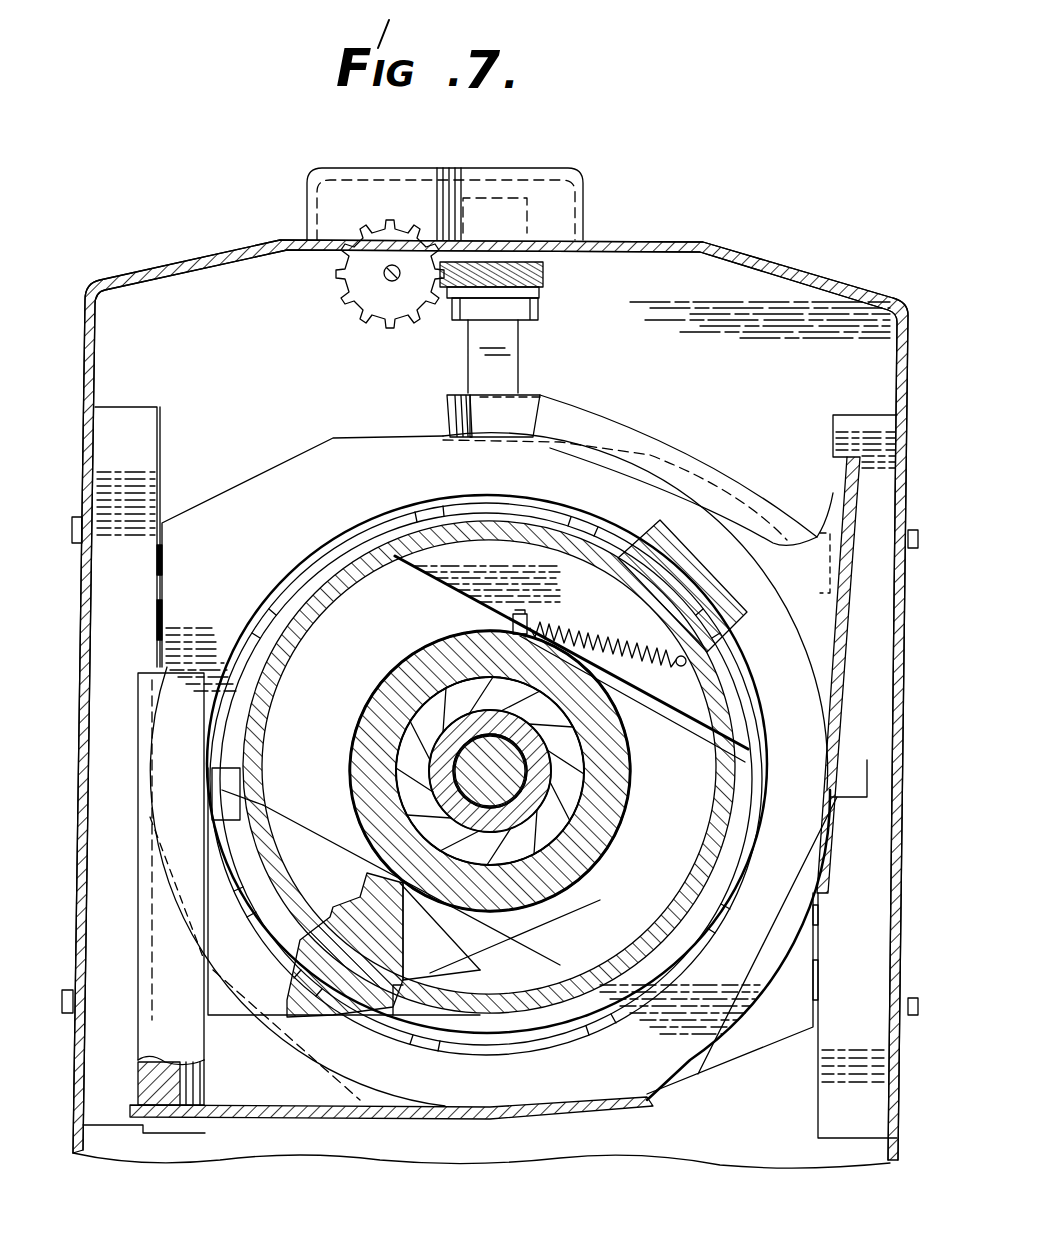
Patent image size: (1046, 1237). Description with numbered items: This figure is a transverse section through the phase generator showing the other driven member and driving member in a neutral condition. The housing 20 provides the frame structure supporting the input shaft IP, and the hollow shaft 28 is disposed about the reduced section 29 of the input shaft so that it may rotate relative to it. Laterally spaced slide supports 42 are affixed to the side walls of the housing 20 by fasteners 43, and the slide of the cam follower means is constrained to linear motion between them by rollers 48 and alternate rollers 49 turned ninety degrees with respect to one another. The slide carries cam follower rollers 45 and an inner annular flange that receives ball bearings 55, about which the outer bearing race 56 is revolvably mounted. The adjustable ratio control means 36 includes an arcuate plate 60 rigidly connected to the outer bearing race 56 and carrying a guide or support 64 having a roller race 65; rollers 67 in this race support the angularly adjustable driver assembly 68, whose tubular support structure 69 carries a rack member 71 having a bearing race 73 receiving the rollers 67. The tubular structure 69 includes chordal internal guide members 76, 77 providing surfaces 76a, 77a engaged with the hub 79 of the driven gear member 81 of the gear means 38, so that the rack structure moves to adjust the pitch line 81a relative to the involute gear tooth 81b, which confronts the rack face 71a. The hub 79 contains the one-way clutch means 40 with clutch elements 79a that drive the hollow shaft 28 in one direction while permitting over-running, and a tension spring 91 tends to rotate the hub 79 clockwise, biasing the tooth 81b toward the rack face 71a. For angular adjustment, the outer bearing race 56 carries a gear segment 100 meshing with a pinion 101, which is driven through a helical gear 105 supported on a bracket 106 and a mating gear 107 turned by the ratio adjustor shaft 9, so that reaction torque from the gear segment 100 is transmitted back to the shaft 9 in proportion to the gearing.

The housing 20 is at (752, 262).
The ratio adjustor shaft 9 is at (384, 273).
The mating gear 107 is at (370, 298).
The helical gear 105 is at (545, 278).
The bracket 106 is at (540, 300).
The gear segment 100 is at (522, 412).
The pinion 101 is at (447, 418).
The outer bearing race 56 is at (598, 460).
The ball bearings 55 is at (600, 462).
The cam follower rollers 45 is at (410, 515).
The tubular support structure 69 is at (345, 578).
The driver assembly 68 is at (298, 597).
The fasteners 43 is at (75, 520).
The rollers 48 is at (157, 555).
The slide supports 42 is at (105, 605).
The alternate rollers 49 is at (157, 620).
The guide or support 64 is at (155, 776).
The rollers 67 is at (226, 794).
The guide member 76 is at (455, 583).
The tension spring 91 is at (585, 625).
The one-way clutch means 40 is at (405, 720).
The guide surface 77a is at (283, 800).
The guide member 77 is at (316, 838).
The reduced shaft section 29 is at (490, 771).
The input shaft IP is at (530, 765).
The guide surface 76a is at (735, 720).
The hollow shaft 28 is at (548, 790).
The hub 79 is at (610, 825).
The clutch elements 79a is at (520, 848).
The gear means 38 is at (575, 870).
The driven gear member 81 is at (540, 895).
The rack member 71 is at (258, 960).
The rack face 71a is at (405, 940).
The pitch line 81a is at (408, 940).
The bearing race 73 is at (230, 960).
The involute gear tooth 81b is at (395, 995).
The roller race 65 is at (192, 1106).
The adjustable ratio control means 36 is at (556, 1118).
The arcuate plate 60 is at (725, 1012).